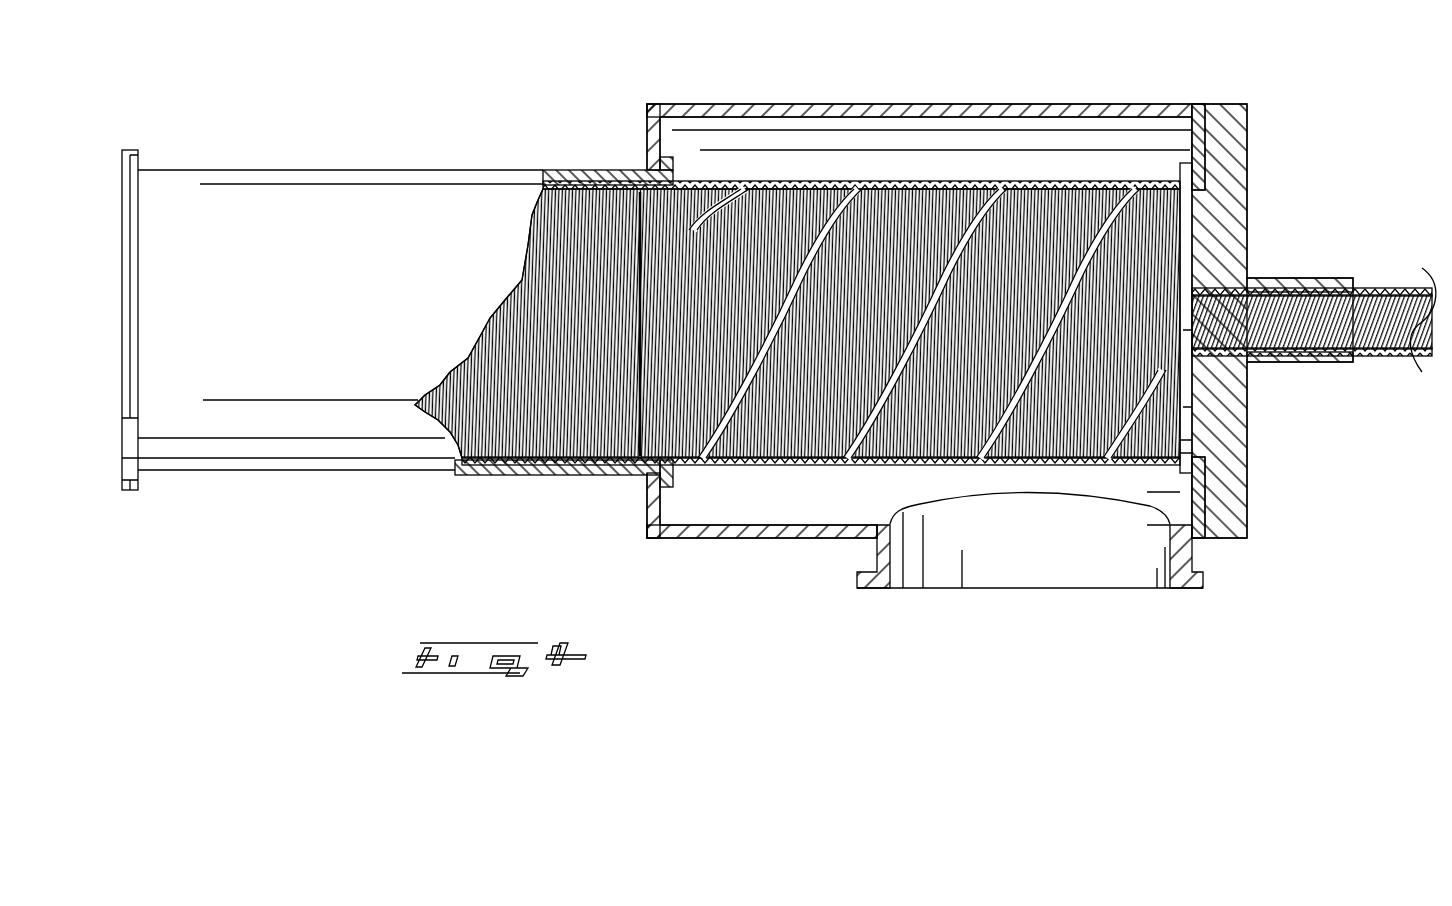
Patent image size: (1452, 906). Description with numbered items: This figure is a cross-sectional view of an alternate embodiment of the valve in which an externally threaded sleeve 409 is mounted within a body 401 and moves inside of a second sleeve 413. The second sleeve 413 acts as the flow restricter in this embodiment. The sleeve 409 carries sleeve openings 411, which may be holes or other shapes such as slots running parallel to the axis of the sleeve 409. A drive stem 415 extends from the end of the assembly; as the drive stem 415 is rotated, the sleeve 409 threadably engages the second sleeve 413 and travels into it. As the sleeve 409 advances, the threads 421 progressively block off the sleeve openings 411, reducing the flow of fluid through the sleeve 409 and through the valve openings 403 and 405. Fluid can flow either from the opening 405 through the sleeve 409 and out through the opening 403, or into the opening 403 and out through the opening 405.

The housing 401 is at (1103, 104).
The valve opening 403 is at (1062, 590).
The valve opening 405 is at (122, 470).
The sleeve 409 is at (800, 465).
The sleeve openings 411 is at (1003, 184).
The second sleeve 413 is at (288, 222).
The drive stem 415 is at (1380, 290).
The threads 421 is at (673, 166).